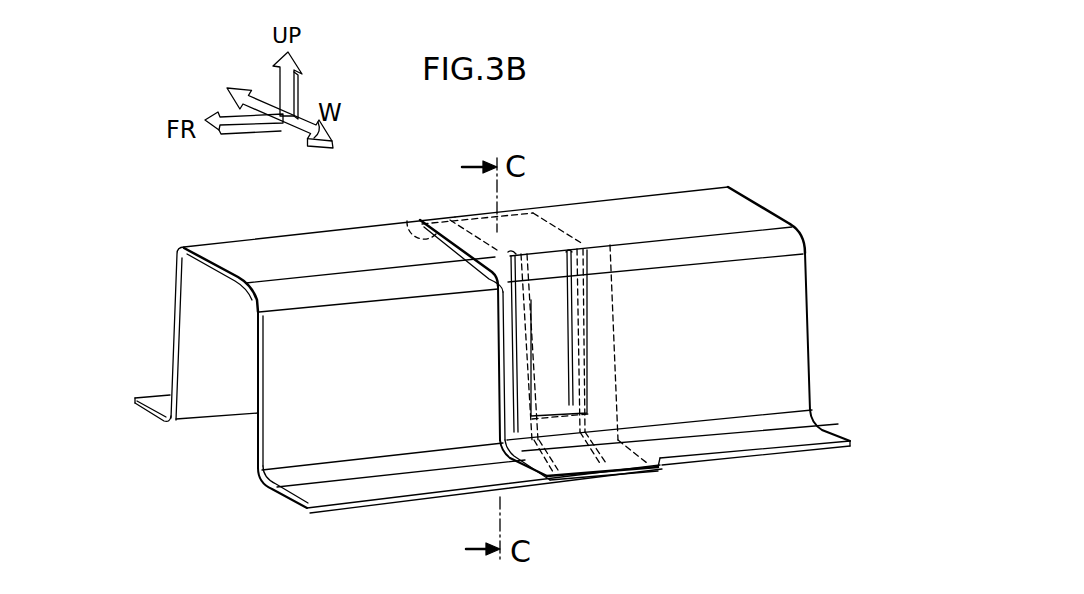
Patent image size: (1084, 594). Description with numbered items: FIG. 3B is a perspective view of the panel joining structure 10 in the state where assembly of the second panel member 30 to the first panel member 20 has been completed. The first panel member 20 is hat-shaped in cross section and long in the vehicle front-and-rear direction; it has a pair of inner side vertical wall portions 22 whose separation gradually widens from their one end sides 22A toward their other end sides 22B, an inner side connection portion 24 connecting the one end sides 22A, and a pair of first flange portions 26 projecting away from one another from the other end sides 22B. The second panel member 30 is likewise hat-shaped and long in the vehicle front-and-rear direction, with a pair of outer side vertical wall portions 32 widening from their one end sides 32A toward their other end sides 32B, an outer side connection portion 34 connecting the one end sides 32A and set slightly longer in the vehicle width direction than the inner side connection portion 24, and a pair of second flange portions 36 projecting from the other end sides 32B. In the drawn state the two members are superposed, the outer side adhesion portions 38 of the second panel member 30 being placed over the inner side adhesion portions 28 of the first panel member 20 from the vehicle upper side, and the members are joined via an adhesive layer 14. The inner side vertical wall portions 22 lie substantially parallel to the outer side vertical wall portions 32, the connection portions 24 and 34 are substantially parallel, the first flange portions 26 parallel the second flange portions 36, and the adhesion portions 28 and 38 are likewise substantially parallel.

The panel joining structure 10 is at (810, 162).
The adhesive layer 14 is at (419, 218).
The first panel member 20 is at (255, 242).
The inner side vertical wall portions 22 is at (293, 432).
The one end sides of inner side vertical wall portions 22A is at (286, 293).
The other end sides of inner side vertical wall portions 22B is at (275, 477).
The inner side connection portion 24 is at (311, 252).
The first flange portions 26 is at (157, 403).
The inner side adhesion portions 28 is at (534, 334).
The second panel member 30 is at (705, 186).
The outer side vertical wall portions 32 is at (784, 319).
The one end sides of outer side vertical wall portions 32A is at (773, 238).
The other end sides of outer side vertical wall portions 32B is at (796, 422).
The outer side connection portion 34 is at (660, 207).
The second flange portions 36 is at (730, 444).
The outer side adhesion portions 38 is at (557, 390).